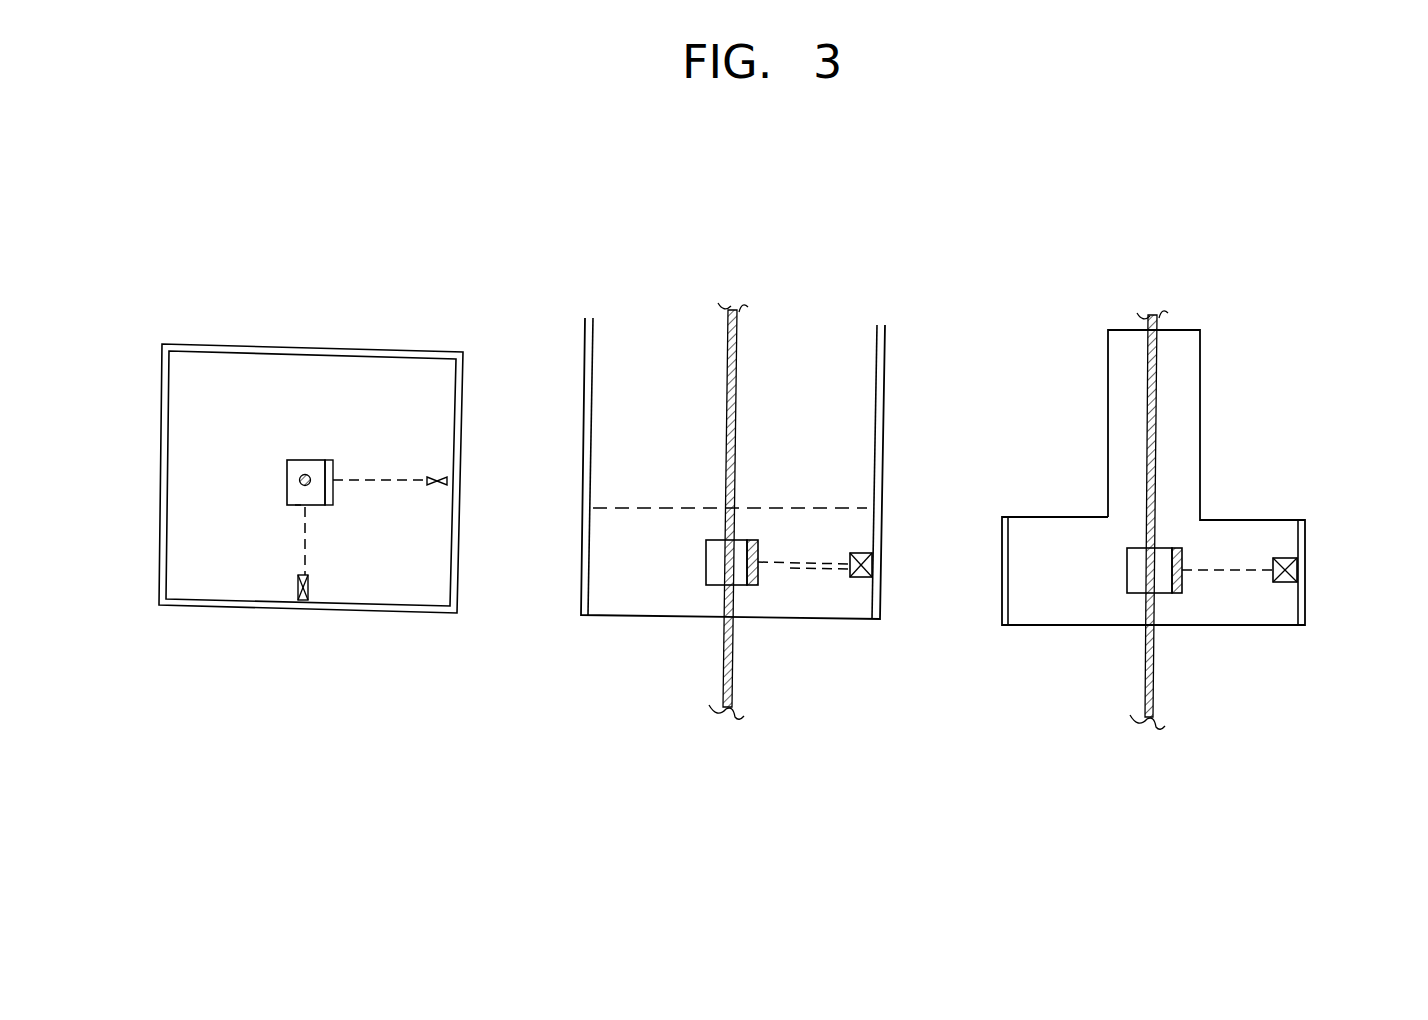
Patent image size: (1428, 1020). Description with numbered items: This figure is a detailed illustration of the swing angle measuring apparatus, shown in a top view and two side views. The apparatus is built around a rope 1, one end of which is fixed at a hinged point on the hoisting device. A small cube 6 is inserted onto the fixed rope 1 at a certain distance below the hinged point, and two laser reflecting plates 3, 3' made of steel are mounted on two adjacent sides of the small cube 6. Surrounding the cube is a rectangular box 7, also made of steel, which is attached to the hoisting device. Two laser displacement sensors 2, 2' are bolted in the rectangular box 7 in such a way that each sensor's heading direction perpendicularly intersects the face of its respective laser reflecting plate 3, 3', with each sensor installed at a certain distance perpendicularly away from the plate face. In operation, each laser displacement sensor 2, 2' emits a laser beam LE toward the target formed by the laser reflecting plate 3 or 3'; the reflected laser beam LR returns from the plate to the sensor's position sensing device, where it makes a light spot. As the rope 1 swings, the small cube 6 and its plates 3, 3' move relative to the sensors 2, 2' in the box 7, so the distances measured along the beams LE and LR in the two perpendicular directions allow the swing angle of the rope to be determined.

The rope 1 is at (318, 463).
The laser displacement sensor 2 is at (851, 610).
The laser displacement sensor 2' is at (727, 508).
The laser reflecting plate 3 is at (778, 630).
The laser reflecting plate 3' is at (611, 544).
The small cube 6 is at (295, 463).
The rectangular box 7 is at (458, 445).
The emitted laser beam LE is at (813, 560).
The reflected laser beam LR is at (837, 570).